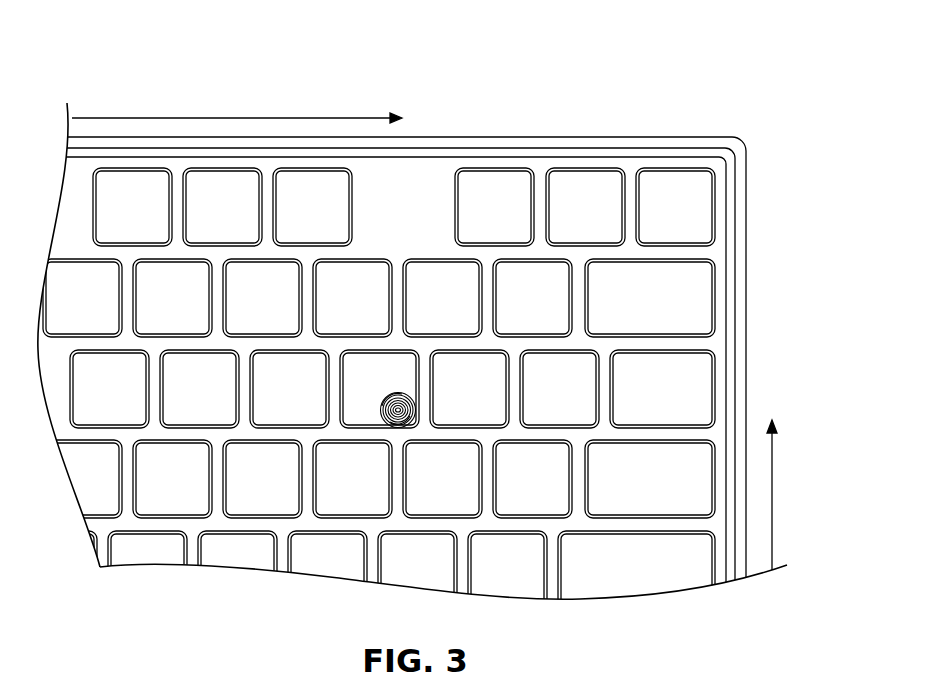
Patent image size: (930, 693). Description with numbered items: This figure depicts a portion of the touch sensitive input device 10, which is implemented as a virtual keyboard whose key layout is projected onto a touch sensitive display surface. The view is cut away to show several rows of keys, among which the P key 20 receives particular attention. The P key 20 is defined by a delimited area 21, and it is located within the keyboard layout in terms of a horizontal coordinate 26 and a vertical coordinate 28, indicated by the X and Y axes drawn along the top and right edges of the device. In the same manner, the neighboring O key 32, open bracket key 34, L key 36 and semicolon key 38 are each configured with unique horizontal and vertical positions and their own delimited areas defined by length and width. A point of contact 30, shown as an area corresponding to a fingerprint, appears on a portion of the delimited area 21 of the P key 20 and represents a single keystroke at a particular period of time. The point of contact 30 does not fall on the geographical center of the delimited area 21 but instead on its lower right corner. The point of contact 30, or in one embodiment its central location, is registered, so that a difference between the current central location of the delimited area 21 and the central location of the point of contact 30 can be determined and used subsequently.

The touch sensitive input device 10 is at (607, 93).
The P key 20 is at (397, 376).
The delimited area 21 is at (350, 352).
The horizontal (X) coordinate 26 is at (116, 118).
The vertical (Y) coordinate 28 is at (773, 532).
The point of contact 30 is at (402, 393).
The O key 32 is at (302, 400).
The open bracket key 34 is at (487, 401).
The L key 36 is at (364, 488).
The semicolon key 38 is at (459, 488).